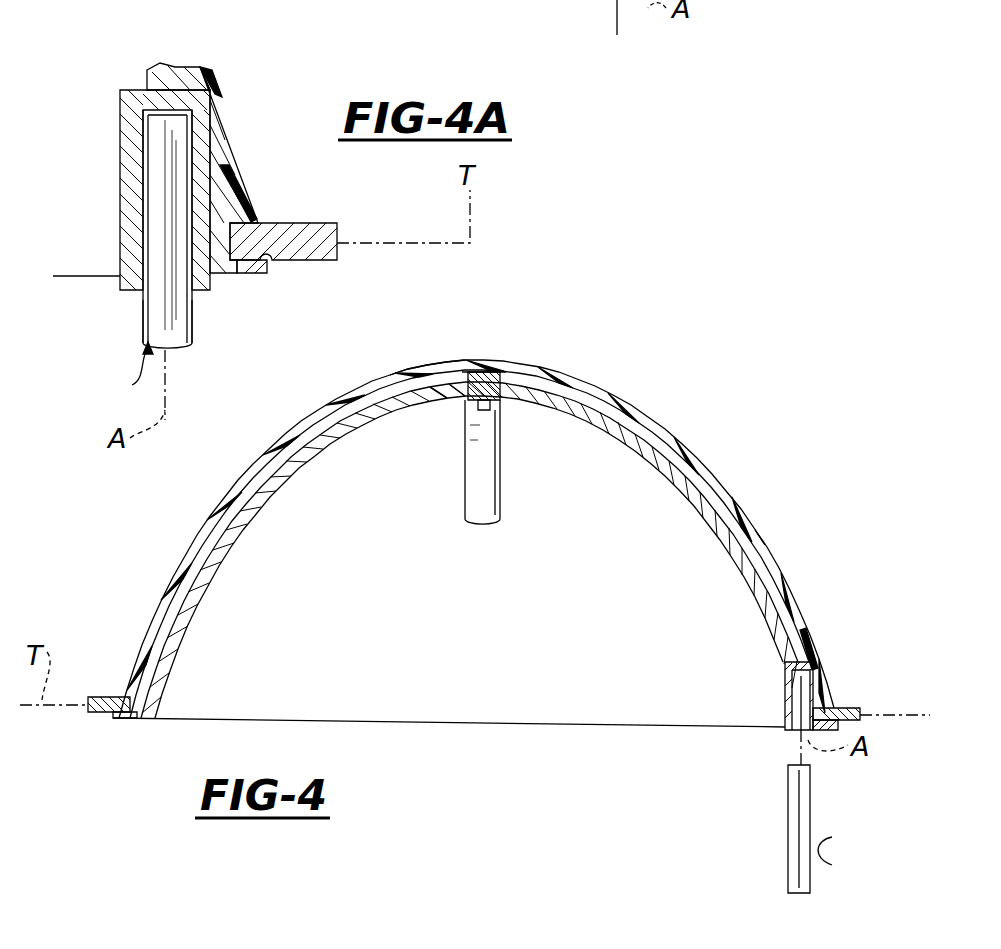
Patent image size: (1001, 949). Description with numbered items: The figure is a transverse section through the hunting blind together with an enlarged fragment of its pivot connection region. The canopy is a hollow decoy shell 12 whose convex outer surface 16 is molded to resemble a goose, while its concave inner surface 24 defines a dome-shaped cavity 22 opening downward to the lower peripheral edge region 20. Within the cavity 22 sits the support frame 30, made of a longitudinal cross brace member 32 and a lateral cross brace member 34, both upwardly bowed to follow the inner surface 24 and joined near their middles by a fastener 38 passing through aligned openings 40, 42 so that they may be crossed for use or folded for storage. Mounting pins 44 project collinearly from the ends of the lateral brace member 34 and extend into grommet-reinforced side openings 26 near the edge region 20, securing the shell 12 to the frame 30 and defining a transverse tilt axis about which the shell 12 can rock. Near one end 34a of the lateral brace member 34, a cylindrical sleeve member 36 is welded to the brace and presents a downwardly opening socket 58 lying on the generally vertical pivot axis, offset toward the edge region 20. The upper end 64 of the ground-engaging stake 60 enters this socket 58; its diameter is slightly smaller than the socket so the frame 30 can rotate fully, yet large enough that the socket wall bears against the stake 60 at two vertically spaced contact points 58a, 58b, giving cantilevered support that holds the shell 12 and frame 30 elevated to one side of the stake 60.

In FIG. 4A, the decoy shell 12 is at (243, 157).
In FIG. 4, the decoy shell 12 is at (690, 445).
In FIG. 4, the outer convex surface 16 is at (727, 497).
In FIG. 4, the lower peripheral edge region 20 is at (117, 720).
In FIG. 4, the dome-shaped cavity 22 is at (430, 599).
In FIG. 4, the concave inner surface 24 is at (420, 368).
In FIG. 4A, the side openings 26 is at (264, 258).
In FIG. 4, the side openings 26 is at (112, 698).
In FIG. 4, the support frame 30 is at (750, 532).
In FIG. 4, the longitudinal cross brace member 32 is at (498, 376).
In FIG. 4A, the lateral cross brace member 34 is at (145, 85).
In FIG. 4, the lateral cross brace member 34 is at (620, 420).
In FIG. 4A, the end of lateral brace member 34a is at (256, 220).
In FIG. 4, the end of lateral brace member 34a is at (812, 640).
In FIG. 4A, the pivot connection sleeve member 36 is at (120, 122).
In FIG. 4, the pivot connection sleeve member 36 is at (785, 680).
In FIG. 4, the fastener 38 is at (485, 370).
In FIG. 4, the opening in longitudinal brace 40 is at (466, 397).
In FIG. 4, the opening in lateral brace 42 is at (482, 413).
In FIG. 4A, the mounting pins 44 is at (337, 228).
In FIG. 4, the mounting pins 44 is at (90, 715).
In FIG. 4A, the socket 58 is at (152, 150).
In FIG. 4, the socket 58 is at (796, 692).
In FIG. 4A, the upper contact point of socket 58a is at (200, 67).
In FIG. 4A, the lower contact point of socket 58b is at (148, 298).
In FIG. 4A, the support base stake 60 is at (124, 374).
In FIG. 4, the support base stake 60 is at (846, 857).
In FIG. 4A, the upper end of stake 64 is at (160, 207).
In FIG. 4, the upper end of stake 64 is at (797, 817).